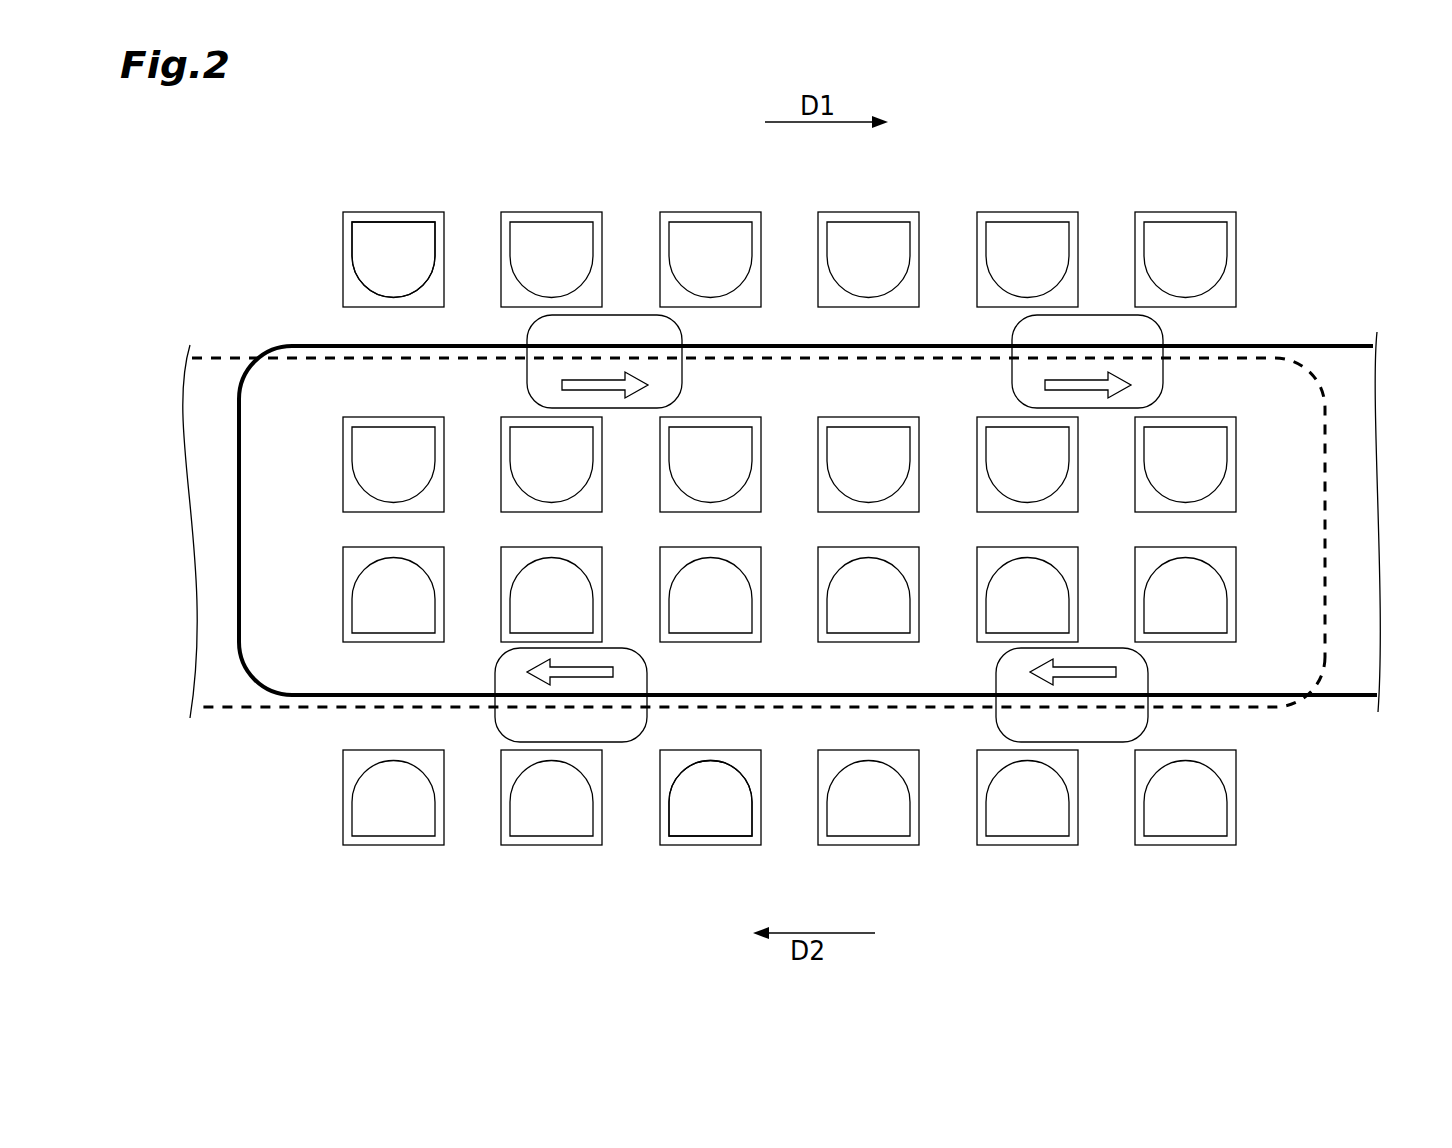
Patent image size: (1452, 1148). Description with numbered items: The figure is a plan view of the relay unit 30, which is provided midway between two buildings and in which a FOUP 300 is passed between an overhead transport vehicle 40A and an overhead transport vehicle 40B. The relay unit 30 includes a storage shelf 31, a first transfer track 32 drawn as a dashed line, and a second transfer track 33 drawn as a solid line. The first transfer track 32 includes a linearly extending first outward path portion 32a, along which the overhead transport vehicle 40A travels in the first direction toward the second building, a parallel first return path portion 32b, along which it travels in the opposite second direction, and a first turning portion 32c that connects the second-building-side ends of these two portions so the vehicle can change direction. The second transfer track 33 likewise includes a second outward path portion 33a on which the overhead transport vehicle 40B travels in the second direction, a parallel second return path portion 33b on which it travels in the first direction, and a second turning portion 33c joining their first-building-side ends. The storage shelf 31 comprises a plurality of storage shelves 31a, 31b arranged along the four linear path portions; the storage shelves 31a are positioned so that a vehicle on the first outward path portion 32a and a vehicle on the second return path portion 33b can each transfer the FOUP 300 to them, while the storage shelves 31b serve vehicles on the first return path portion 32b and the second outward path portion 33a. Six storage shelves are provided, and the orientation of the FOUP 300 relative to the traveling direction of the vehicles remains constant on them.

The relay unit 30 is at (1300, 200).
The FOUP 300 is at (390, 232).
The storage shelf 31 is at (791, 529).
The storage shelves 31a is at (553, 212).
The storage shelves 31b is at (1230, 630).
The first transfer track 32 is at (821, 533).
The first outward path portion 32a is at (214, 356).
The first return path portion 32b is at (260, 711).
The first turning portion 32c is at (1330, 478).
The second transfer track 33 is at (750, 526).
The second outward path portion 33a is at (1363, 697).
The second return path portion 33b is at (1292, 344).
The second turning portion 33c is at (238, 500).
The overhead transport vehicle 40A is at (636, 330).
The overhead transport vehicle 40B is at (1100, 330).